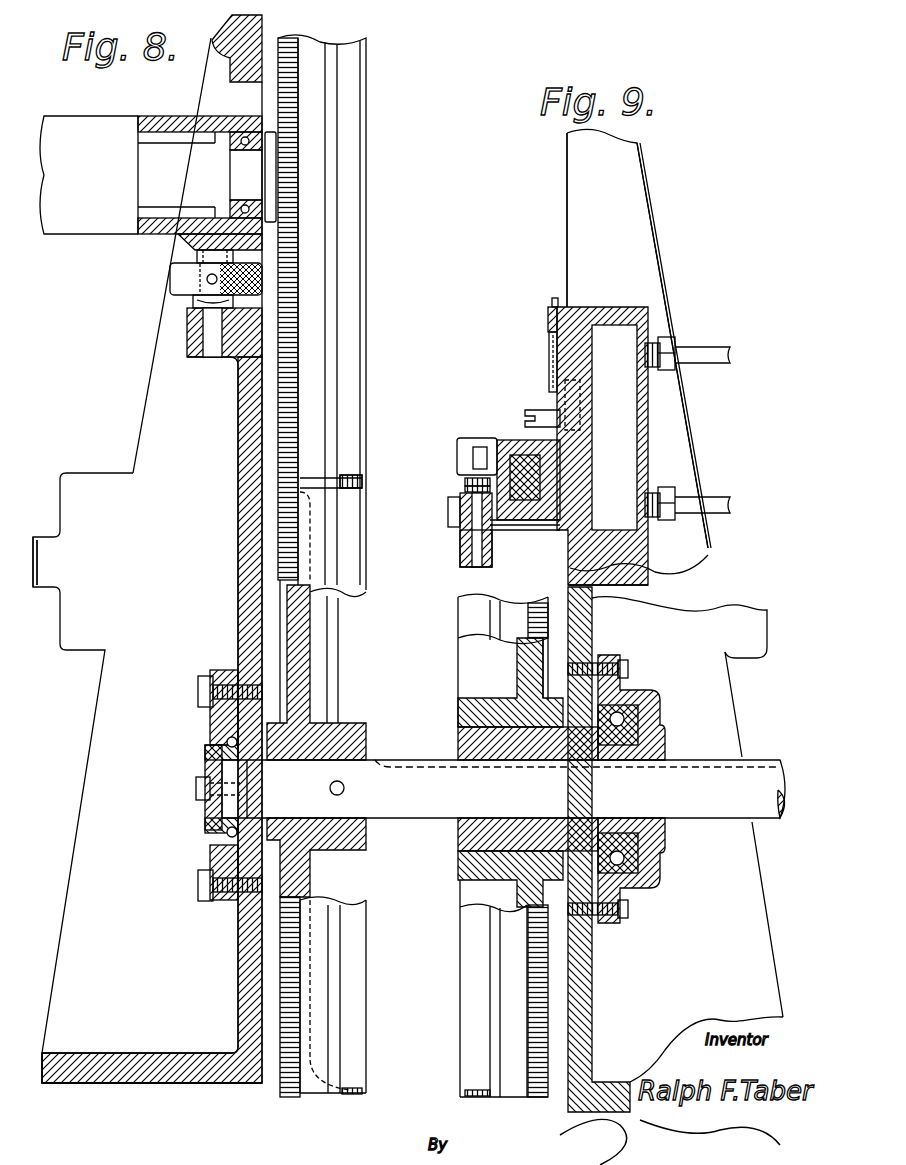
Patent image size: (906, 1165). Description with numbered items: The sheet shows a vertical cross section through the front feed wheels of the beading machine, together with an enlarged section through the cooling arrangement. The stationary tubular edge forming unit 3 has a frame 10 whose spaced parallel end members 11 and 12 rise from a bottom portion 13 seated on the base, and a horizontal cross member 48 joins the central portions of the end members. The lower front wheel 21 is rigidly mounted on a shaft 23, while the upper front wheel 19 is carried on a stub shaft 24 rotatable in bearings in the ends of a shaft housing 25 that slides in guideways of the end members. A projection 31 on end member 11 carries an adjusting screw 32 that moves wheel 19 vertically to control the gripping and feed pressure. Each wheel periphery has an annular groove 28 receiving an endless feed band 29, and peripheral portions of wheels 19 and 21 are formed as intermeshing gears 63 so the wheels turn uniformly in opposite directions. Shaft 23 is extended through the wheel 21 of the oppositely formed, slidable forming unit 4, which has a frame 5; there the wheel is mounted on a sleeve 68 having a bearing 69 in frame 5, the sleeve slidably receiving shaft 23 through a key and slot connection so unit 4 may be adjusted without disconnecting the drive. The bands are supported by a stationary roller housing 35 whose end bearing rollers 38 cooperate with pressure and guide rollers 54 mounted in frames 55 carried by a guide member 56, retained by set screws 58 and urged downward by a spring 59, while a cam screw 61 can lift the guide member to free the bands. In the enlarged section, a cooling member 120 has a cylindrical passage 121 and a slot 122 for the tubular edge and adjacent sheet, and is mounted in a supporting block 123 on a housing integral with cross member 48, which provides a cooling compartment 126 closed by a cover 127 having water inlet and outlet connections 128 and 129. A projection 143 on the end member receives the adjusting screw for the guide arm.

In FIG. 8, the tubular edge forming unit 3 is at (140, 404).
In FIG. 9, the tubular edge forming unit 3 is at (657, 181).
In FIG. 8, the tubular edge forming unit 4 is at (749, 614).
In FIG. 8, the frame 5 is at (726, 722).
In FIG. 9, the frame 10 is at (664, 229).
In FIG. 8, the end member 11 is at (141, 433).
In FIG. 9, the end member 12 is at (640, 270).
In FIG. 8, the bottom portion 13 is at (95, 1062).
In FIG. 8, the wheel 19 is at (361, 72).
In FIG. 8, the wheel 21 is at (462, 942).
In FIG. 8, the shaft 23 is at (718, 806).
In FIG. 8, the stub shaft 24 is at (155, 148).
In FIG. 8, the shaft housing 25 is at (106, 126).
In FIG. 8, the annular groove 28 is at (350, 362).
In FIG. 8, the endless feed band 29 is at (348, 476).
In FIG. 9, the endless feed band 29 is at (475, 489).
In FIG. 8, the projection 31 is at (190, 328).
In FIG. 8, the adjusting screw 32 is at (180, 275).
In FIG. 9, the roller housing 35 is at (463, 562).
In FIG. 9, the bearing roller 38 is at (468, 525).
In FIG. 9, the cross member 48 is at (612, 560).
In FIG. 9, the pressure and guide roller 54 is at (470, 481).
In FIG. 9, the frame 55 is at (460, 450).
In FIG. 9, the guide member 56 is at (550, 364).
In FIG. 9, the set screw 58 is at (548, 320).
In FIG. 9, the spring 59 is at (553, 300).
In FIG. 9, the cam screw 61 is at (540, 417).
In FIG. 8, the gear 63 is at (298, 183).
In FIG. 8, the sleeve 68 is at (573, 735).
In FIG. 8, the bearing 69 is at (650, 706).
In FIG. 9, the cooling member 120 is at (521, 508).
In FIG. 9, the cylindrical passage 121 is at (500, 456).
In FIG. 9, the slot 122 is at (478, 494).
In FIG. 9, the supporting block 123 is at (530, 442).
In FIG. 9, the cooling compartment 126 is at (607, 342).
In FIG. 9, the cover 127 is at (649, 331).
In FIG. 9, the water inlet connection 128 is at (706, 350).
In FIG. 9, the water outlet connection 129 is at (718, 500).
In FIG. 8, the projection 143 is at (40, 580).